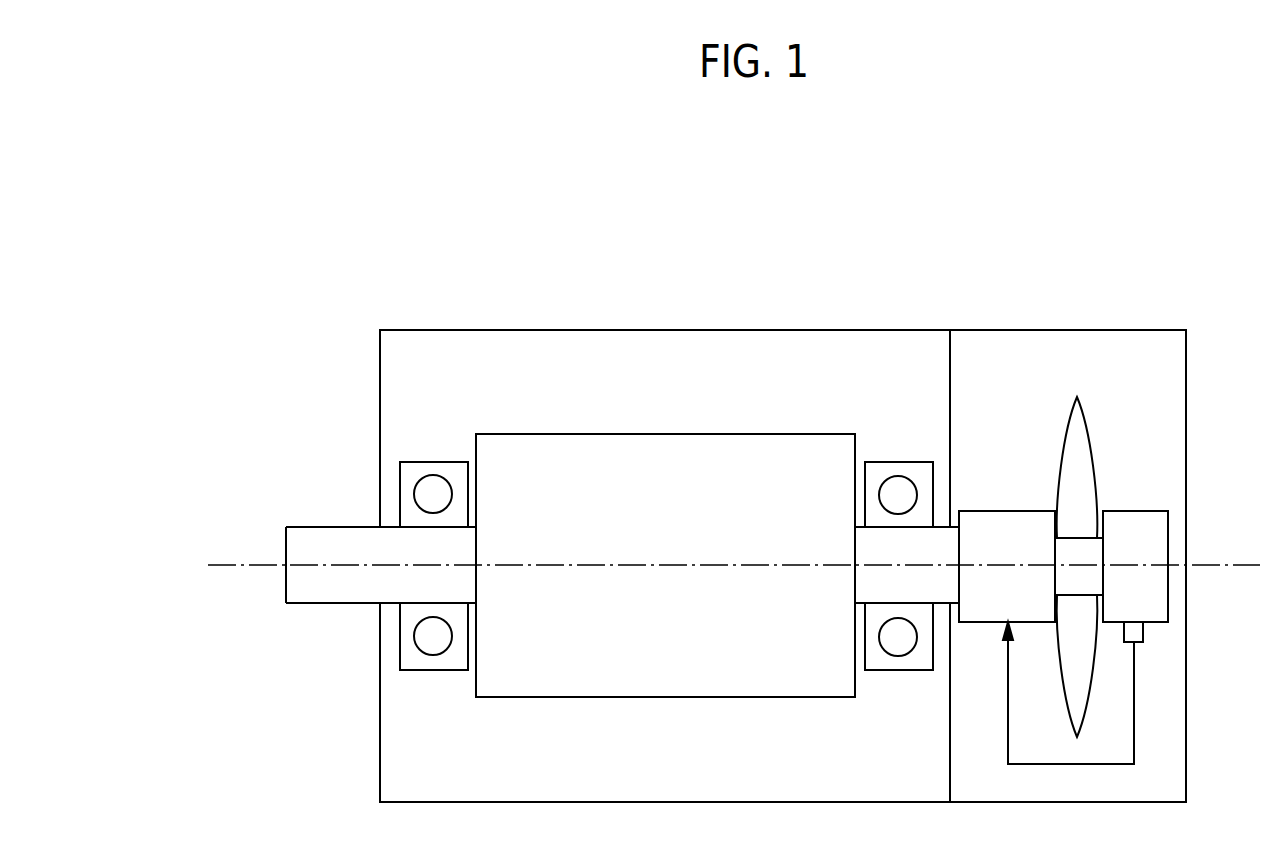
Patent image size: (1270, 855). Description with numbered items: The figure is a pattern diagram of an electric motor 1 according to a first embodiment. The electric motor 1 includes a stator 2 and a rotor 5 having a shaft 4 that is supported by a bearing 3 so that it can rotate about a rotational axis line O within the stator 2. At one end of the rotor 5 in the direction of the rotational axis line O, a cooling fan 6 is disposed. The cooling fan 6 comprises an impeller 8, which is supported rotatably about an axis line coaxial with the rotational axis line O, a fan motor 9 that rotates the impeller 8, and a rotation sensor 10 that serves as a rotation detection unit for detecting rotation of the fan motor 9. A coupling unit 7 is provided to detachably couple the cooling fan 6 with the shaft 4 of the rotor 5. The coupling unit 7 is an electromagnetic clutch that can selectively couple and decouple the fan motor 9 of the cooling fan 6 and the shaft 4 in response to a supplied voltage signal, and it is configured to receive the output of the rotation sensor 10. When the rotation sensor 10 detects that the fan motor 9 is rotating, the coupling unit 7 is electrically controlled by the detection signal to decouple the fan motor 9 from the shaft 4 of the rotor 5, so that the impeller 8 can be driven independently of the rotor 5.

The electric motor 1 is at (927, 167).
The stator 2 is at (588, 330).
The bearing 3 is at (424, 461).
The shaft 4 is at (866, 606).
The rotor 5 is at (690, 697).
The cooling fan 6 is at (1163, 413).
The coupling unit 7 is at (1000, 511).
The impeller 8 is at (1077, 397).
The fan motor 9 is at (1170, 529).
The rotation sensor 10 is at (1143, 632).
The rotational axis line O is at (239, 565).